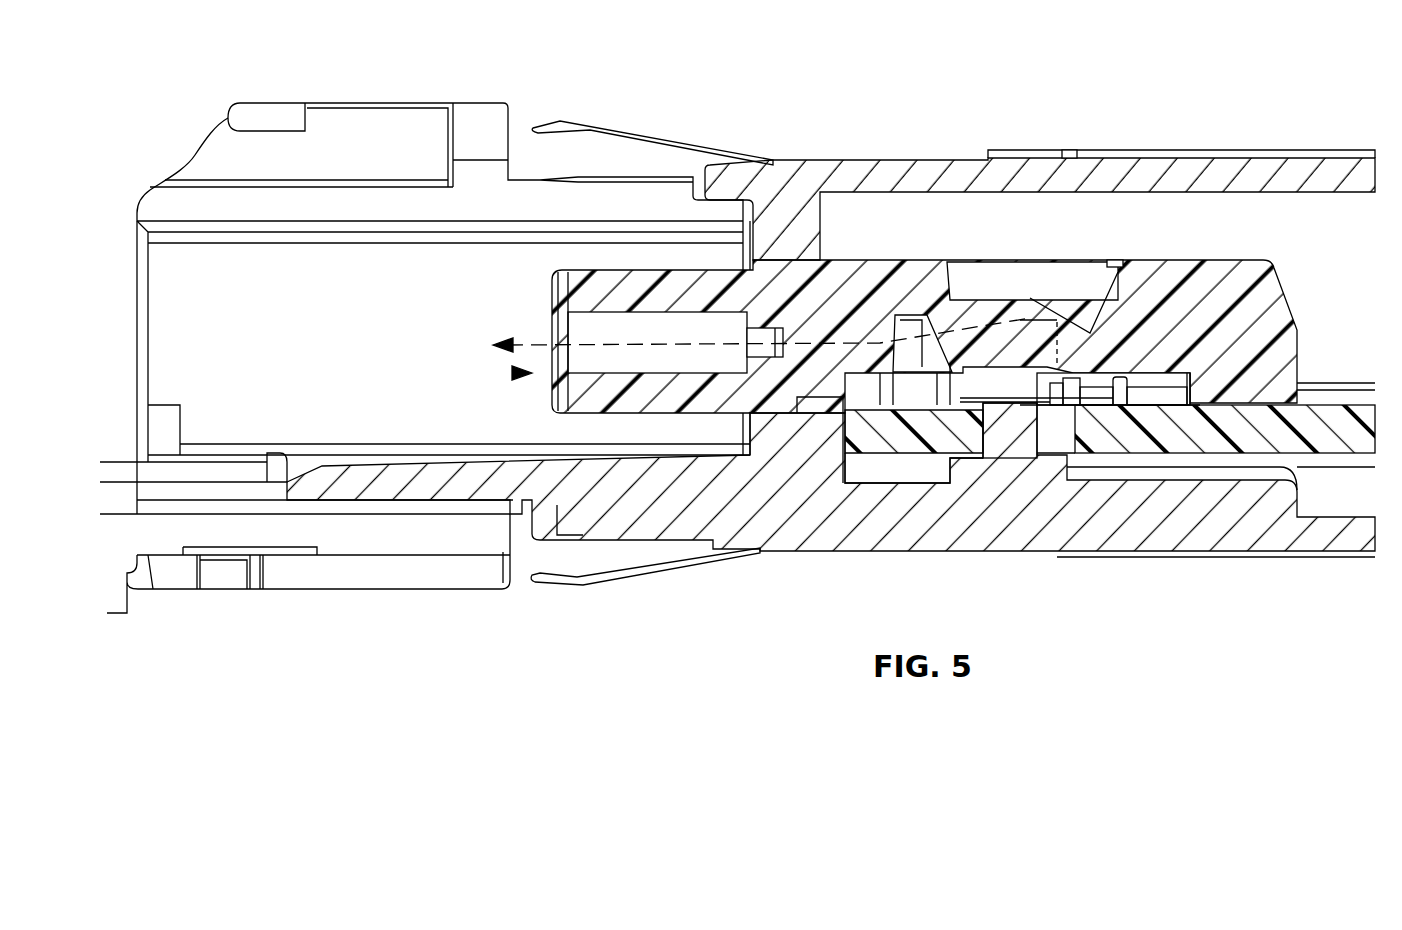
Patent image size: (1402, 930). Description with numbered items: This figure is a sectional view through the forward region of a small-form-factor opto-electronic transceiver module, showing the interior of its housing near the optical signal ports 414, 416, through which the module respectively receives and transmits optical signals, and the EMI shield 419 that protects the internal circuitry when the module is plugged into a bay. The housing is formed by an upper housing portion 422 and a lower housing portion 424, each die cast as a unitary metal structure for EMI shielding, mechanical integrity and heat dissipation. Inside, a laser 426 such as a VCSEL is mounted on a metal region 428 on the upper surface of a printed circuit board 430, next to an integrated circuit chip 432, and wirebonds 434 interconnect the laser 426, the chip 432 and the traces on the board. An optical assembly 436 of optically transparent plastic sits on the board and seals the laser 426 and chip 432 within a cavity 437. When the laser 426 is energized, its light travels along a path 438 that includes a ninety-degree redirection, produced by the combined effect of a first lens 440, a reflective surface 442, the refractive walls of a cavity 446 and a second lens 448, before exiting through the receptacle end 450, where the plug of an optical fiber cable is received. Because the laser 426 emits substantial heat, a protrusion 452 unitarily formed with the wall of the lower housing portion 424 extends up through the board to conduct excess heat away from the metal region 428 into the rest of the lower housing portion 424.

The optical signal port 414 is at (128, 603).
The optical signal port 416 is at (303, 344).
The EMI shield 419 is at (588, 121).
The upper housing portion 422 is at (992, 150).
The lower housing portion 424 is at (794, 556).
The laser 426 is at (1028, 357).
The metal region 428 is at (997, 403).
The printed circuit board 430 is at (1117, 453).
The integrated circuit chip 432 is at (1120, 378).
The wirebonds 434 is at (1168, 372).
The optical assembly 436 is at (513, 376).
The cavity 437 is at (963, 398).
The path 438 is at (532, 340).
The first lens 440 is at (1088, 380).
The reflective surface 442 is at (1062, 355).
The cavity 446 is at (912, 315).
The second lens 448 is at (790, 335).
The receptacle end 450 is at (552, 288).
The protrusion 452 is at (1030, 405).